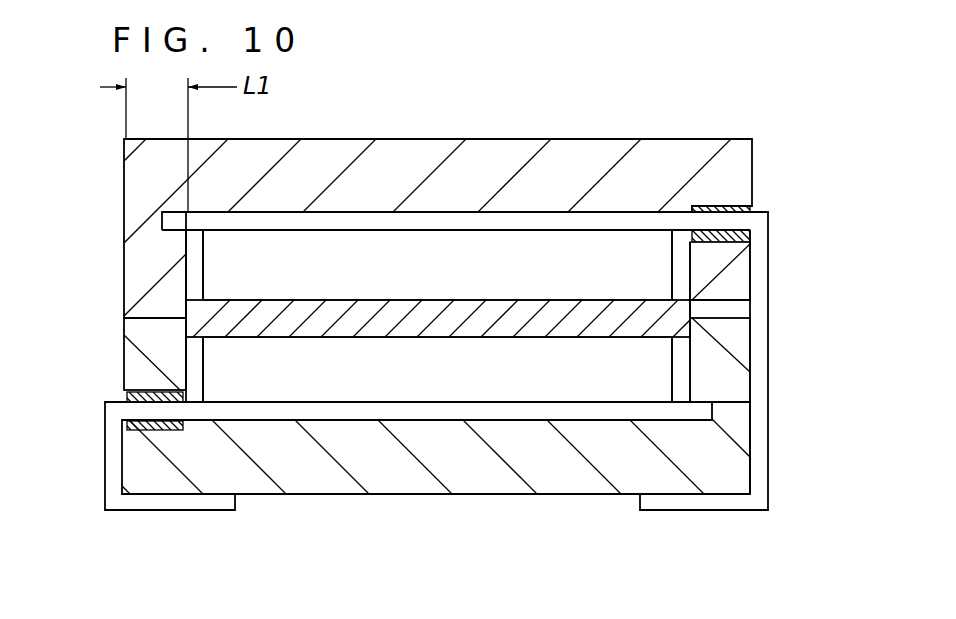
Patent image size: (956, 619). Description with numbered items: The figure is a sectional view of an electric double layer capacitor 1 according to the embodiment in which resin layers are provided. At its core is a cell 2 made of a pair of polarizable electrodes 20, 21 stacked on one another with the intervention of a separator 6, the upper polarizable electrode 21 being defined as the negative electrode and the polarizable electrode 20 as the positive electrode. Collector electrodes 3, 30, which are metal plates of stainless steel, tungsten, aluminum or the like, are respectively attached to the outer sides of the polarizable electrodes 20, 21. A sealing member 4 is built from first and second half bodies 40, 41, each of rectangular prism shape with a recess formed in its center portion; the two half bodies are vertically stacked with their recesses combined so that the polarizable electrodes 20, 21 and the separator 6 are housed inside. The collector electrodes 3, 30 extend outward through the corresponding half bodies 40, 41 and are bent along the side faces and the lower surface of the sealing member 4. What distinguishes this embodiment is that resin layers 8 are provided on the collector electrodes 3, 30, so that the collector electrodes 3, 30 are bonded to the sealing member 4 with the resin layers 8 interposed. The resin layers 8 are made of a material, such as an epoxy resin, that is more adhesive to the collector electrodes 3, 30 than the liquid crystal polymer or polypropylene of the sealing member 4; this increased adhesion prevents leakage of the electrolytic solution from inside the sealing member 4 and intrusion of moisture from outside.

The electric double layer capacitor 1 is at (432, 361).
The cell 2 is at (525, 316).
The collector electrode 3 is at (424, 361).
The sealing member 4 is at (376, 264).
The separator 6 is at (692, 320).
The resin layer 8 is at (128, 396).
The polarizable electrode 20 is at (832, 240).
The polarizable electrode 21 is at (672, 275).
The collector electrode 30 is at (112, 463).
The first half body 40 is at (121, 224).
The second half body 41 is at (119, 321).